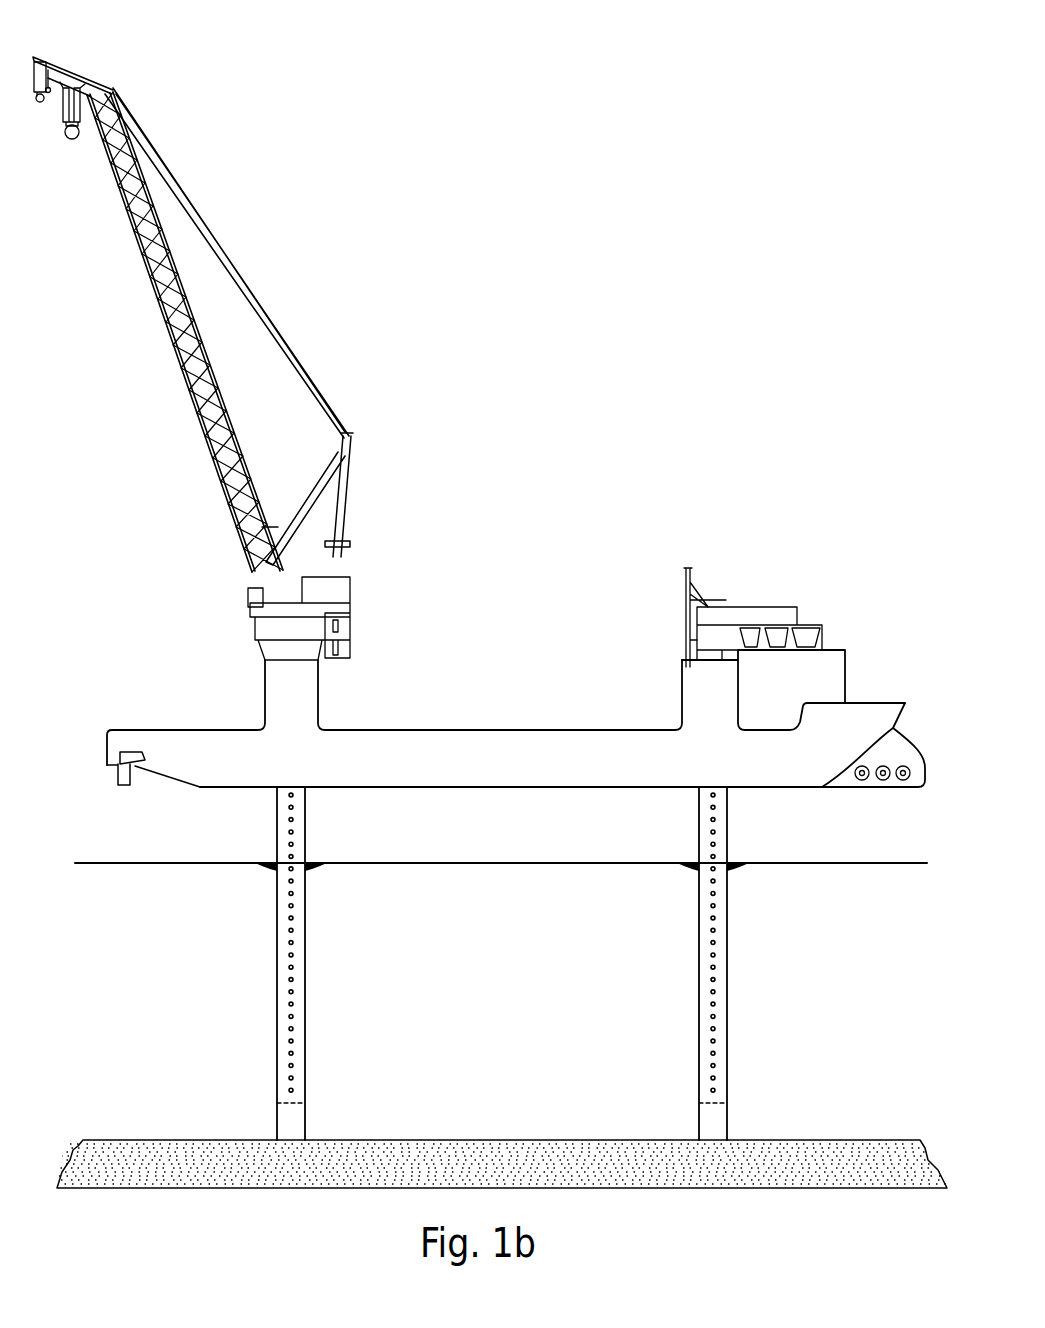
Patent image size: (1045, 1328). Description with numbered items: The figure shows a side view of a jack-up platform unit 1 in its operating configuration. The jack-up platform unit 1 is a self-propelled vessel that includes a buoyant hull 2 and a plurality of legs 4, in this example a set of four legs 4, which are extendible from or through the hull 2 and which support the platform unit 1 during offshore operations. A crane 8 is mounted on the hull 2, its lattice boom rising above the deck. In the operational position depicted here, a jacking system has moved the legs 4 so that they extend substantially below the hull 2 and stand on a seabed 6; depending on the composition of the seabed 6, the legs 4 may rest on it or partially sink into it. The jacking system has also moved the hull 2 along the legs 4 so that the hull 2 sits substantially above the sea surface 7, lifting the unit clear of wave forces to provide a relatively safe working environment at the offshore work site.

The jack-up platform unit 1 is at (479, 422).
The buoyant hull 2 is at (501, 755).
The legs 4 is at (305, 1010).
The seabed 6 is at (845, 1158).
The sea surface 7 is at (843, 863).
The crane 8 is at (150, 293).